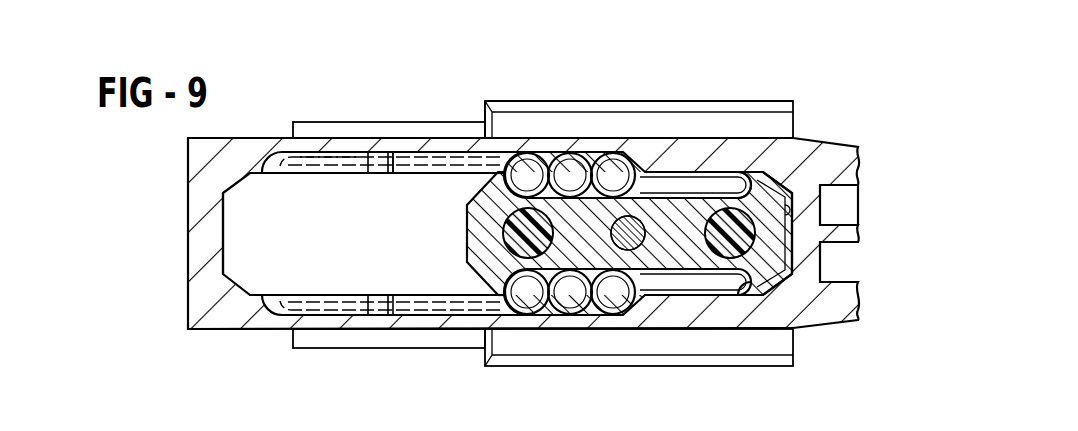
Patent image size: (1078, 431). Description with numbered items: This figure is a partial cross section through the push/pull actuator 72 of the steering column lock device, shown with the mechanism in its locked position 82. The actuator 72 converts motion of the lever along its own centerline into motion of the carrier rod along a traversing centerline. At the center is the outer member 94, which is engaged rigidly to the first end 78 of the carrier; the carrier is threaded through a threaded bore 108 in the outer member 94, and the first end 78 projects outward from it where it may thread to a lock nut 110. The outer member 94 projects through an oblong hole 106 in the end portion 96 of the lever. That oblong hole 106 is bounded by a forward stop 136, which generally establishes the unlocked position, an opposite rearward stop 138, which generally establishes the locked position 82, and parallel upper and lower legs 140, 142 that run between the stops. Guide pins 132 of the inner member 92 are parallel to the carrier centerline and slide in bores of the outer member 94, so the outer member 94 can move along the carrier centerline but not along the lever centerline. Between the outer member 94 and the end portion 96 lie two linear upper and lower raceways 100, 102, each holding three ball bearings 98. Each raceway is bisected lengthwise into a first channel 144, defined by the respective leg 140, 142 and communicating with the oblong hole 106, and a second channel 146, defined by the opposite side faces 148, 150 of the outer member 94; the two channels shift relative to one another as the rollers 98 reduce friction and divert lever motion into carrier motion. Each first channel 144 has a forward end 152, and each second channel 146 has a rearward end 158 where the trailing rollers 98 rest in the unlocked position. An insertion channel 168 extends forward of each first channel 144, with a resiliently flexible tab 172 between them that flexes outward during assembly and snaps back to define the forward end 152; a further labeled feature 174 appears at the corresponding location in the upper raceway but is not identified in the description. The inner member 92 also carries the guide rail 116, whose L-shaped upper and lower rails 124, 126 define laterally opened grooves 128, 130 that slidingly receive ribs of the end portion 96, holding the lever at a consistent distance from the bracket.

The push/pull actuator 72 is at (606, 230).
The locked position 82 is at (606, 230).
The first end of the carrier 78 is at (640, 242).
The inner member 92 is at (572, 92).
The outer member 94 is at (673, 223).
The end portion of the lever 96 is at (220, 340).
The ball bearings 98 is at (570, 168).
The upper raceway 100 is at (498, 162).
The lower raceway 102 is at (478, 312).
The oblong hole 106 is at (348, 249).
The threaded bore 108 is at (612, 236).
The lock nut 110 is at (996, 427).
The guide rail 116 is at (466, 106).
The upper rail 124 is at (787, 132).
The lower rail 126 is at (780, 343).
The upper groove 128 is at (323, 130).
The lower groove 130 is at (330, 337).
The guide pin 132 is at (603, 187).
The forward stop 136 is at (227, 243).
The rearward stop 138 is at (858, 220).
The upper leg 140 is at (340, 143).
The lower leg 142 is at (318, 320).
The first channel 144 is at (422, 165).
The second channel 146 is at (703, 183).
The side face of the outer member 148 is at (743, 178).
The side face of the outer member 150 is at (703, 293).
The forward end of the first channel 152 is at (397, 167).
The rearward end of the second channel 158 is at (752, 195).
The insertion channel 168 is at (352, 163).
The resiliently flexible tab 172 is at (380, 303).
The upper block 174 is at (377, 162).